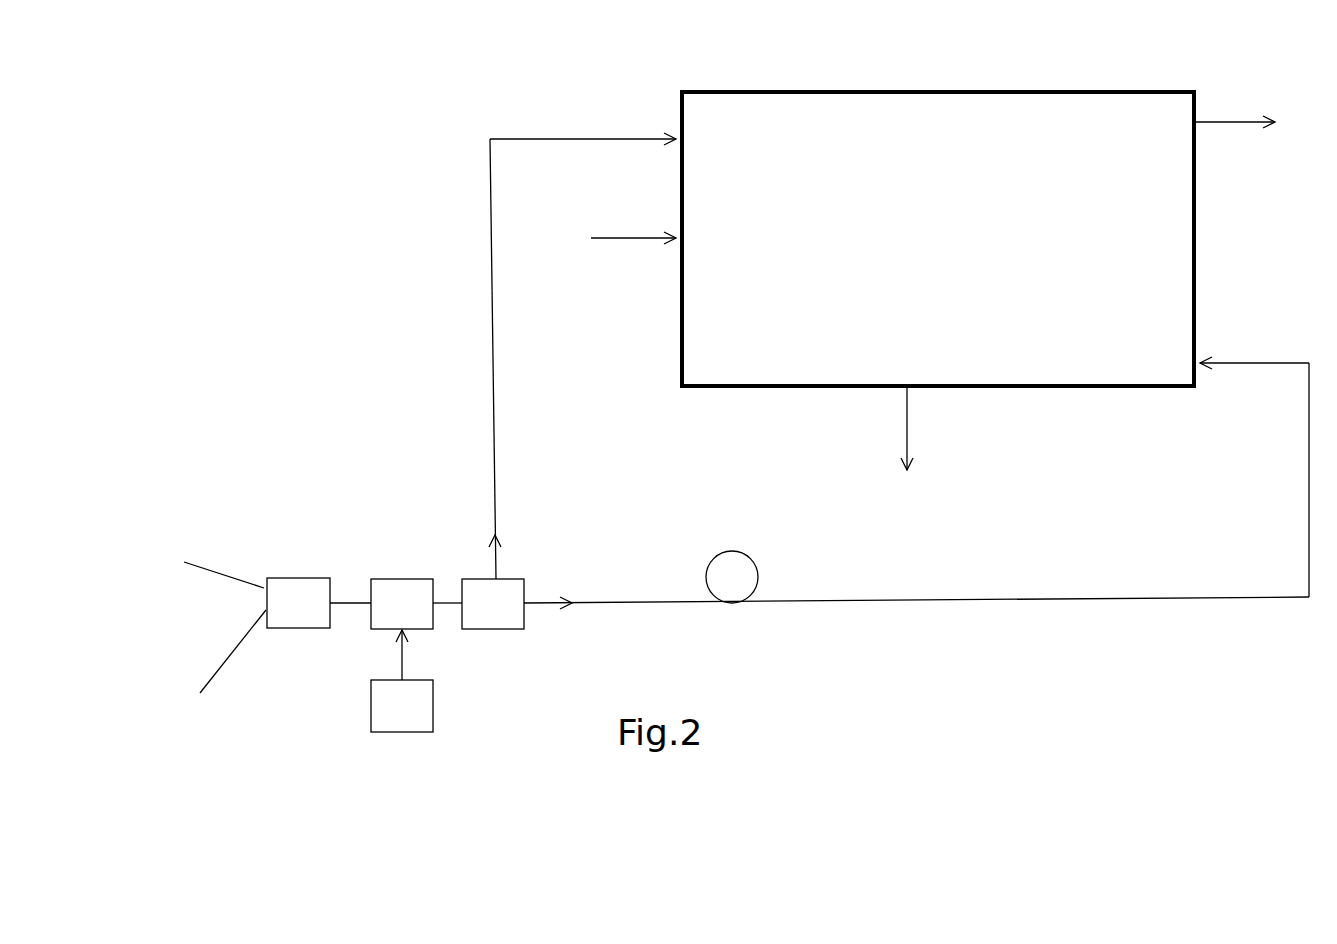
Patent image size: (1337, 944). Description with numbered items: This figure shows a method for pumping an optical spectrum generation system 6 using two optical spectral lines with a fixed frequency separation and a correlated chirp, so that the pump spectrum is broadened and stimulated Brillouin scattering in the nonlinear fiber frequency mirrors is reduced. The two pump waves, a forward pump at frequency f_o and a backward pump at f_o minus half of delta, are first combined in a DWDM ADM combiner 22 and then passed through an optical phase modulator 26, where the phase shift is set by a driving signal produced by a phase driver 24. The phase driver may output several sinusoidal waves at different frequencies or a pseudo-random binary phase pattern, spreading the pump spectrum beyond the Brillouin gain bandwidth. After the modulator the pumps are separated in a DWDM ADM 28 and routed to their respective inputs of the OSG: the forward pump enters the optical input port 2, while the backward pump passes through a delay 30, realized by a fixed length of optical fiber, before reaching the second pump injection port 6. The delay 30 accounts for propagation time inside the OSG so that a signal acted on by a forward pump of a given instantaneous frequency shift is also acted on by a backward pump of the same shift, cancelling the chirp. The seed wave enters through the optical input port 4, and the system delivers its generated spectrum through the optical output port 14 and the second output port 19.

The optical input port 2 is at (582, 341).
The optical input port 4 is at (633, 221).
The second pump injection port 6 is at (995, 215).
The optical output port 14 is at (1235, 99).
The second output port 19 is at (886, 429).
The DWDM ADM combiner 22 is at (246, 627).
The phase driver 24 is at (402, 681).
The optical phase modulator 26 is at (416, 604).
The DWDM ADM 28 is at (885, 496).
The delay 30 is at (732, 559).